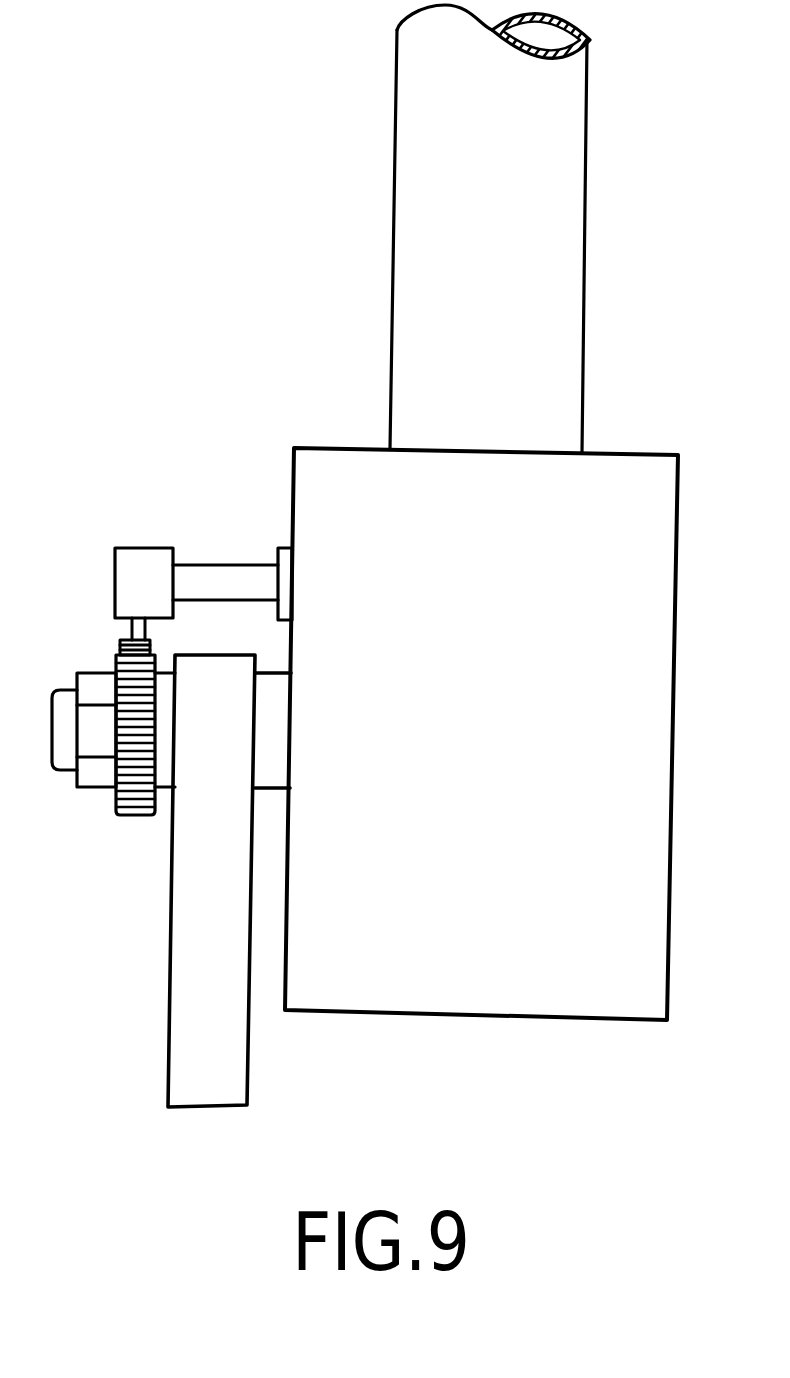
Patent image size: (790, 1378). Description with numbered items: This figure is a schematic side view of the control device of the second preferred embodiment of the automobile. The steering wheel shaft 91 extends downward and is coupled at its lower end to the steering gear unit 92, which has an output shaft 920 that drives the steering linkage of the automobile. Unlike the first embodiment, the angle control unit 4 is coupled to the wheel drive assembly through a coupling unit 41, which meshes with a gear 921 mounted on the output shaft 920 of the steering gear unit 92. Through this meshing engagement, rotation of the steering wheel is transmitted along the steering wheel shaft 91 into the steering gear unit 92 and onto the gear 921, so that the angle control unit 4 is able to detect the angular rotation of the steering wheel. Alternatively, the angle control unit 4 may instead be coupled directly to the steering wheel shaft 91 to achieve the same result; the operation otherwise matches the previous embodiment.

The steering wheel shaft 91 is at (542, 243).
The steering gear unit 92 is at (628, 455).
The angle control unit 4 is at (148, 575).
The coupling unit 41 is at (130, 626).
The output shaft 920 is at (273, 775).
The gear 921 is at (135, 793).